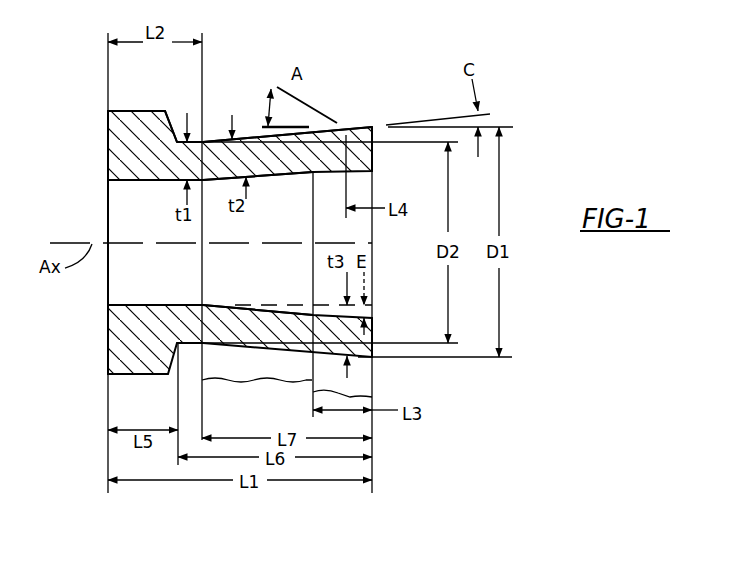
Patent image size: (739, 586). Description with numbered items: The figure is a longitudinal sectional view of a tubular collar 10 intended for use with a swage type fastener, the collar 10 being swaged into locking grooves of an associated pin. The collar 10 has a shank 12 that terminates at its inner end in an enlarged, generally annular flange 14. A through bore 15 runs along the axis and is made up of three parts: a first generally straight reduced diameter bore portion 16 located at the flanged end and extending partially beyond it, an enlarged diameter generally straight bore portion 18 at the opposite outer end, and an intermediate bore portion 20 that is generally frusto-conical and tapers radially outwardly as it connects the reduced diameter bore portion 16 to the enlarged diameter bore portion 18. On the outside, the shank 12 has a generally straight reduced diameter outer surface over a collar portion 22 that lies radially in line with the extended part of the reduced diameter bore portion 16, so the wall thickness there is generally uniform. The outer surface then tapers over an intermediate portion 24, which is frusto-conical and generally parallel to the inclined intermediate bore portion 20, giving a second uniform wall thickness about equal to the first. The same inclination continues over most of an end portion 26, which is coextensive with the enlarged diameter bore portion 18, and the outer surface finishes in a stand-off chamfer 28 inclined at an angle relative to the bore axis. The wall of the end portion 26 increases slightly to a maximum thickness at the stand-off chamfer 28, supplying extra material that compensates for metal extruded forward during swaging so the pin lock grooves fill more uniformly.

The tubular collar 10 is at (237, 80).
The shank 12 is at (213, 306).
The flange 14 is at (130, 153).
The through bore 15 is at (130, 202).
The reduced diameter bore portion 16 is at (170, 303).
The enlarged diameter bore portion 18 is at (358, 172).
The intermediate bore portion 20 is at (272, 177).
The collar portion 22 is at (195, 395).
The intermediate portion 24 is at (257, 380).
The end portion 26 is at (372, 397).
The stand-off chamfer 28 is at (370, 128).